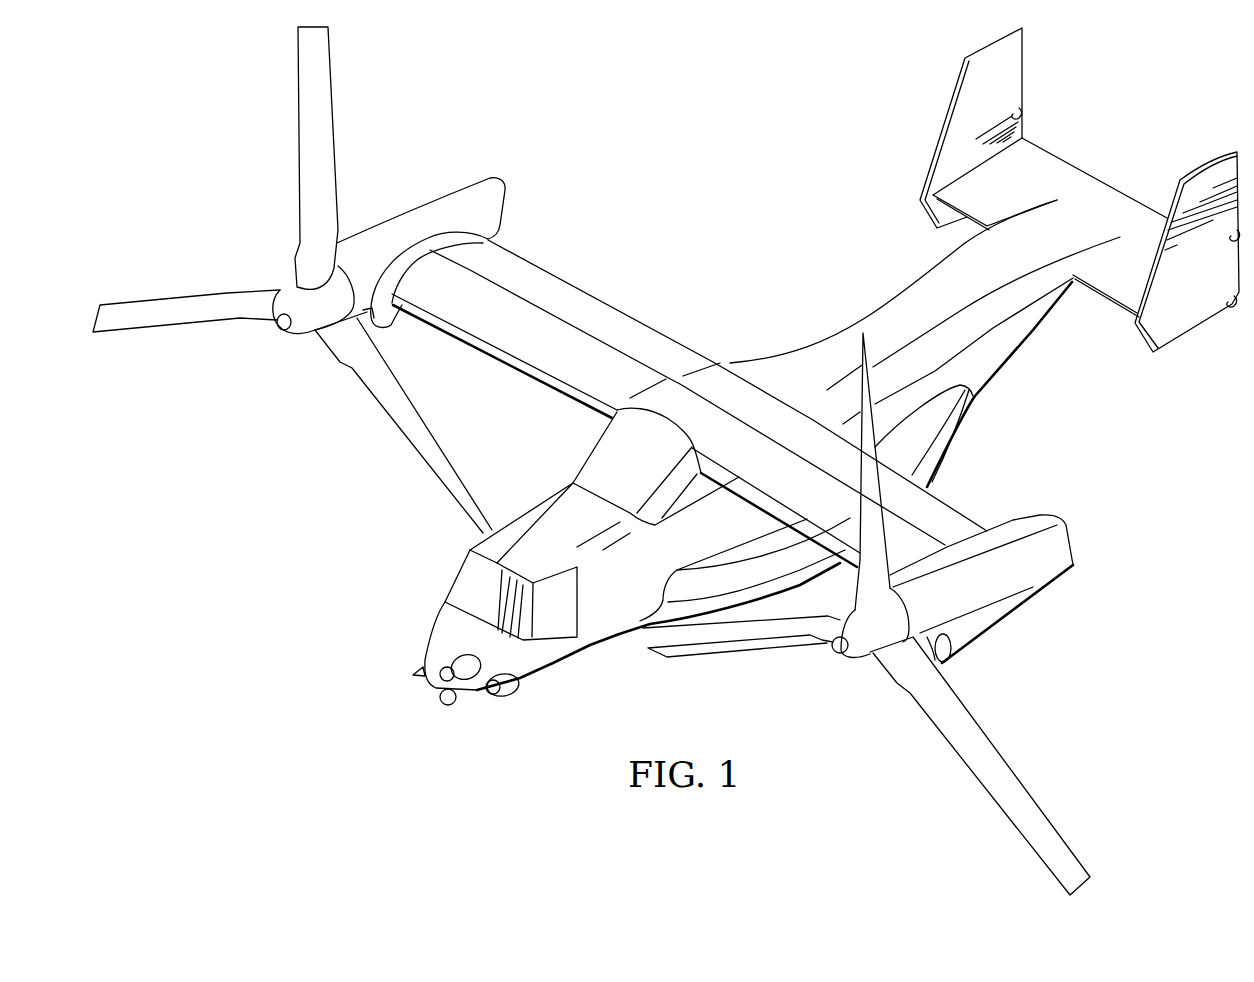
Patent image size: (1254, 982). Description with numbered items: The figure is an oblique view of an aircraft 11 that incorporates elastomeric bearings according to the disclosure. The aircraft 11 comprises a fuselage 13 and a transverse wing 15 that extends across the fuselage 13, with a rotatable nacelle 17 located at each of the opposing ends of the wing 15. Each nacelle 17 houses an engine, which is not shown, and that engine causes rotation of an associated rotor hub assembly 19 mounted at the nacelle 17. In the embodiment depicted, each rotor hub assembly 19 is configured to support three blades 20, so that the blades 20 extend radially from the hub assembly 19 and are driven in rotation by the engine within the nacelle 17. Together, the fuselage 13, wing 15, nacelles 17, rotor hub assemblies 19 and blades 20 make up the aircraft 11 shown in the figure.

The aircraft 11 is at (789, 196).
The fuselage 13 is at (608, 630).
The transverse wing 15 is at (565, 298).
The rotatable nacelle 17 is at (1040, 520).
The rotor hub assembly 19 is at (860, 662).
The blade 20 is at (990, 743).